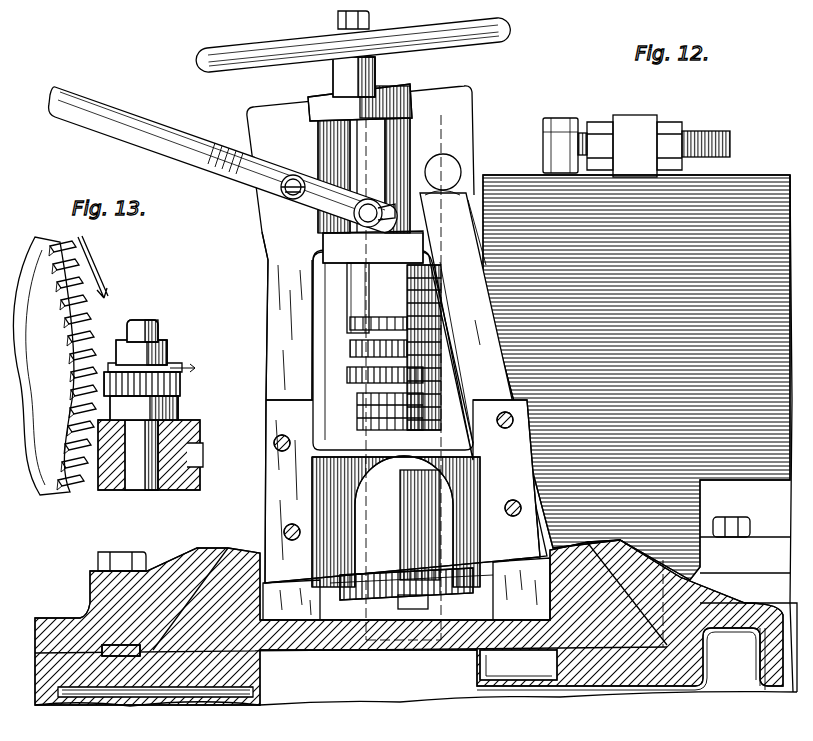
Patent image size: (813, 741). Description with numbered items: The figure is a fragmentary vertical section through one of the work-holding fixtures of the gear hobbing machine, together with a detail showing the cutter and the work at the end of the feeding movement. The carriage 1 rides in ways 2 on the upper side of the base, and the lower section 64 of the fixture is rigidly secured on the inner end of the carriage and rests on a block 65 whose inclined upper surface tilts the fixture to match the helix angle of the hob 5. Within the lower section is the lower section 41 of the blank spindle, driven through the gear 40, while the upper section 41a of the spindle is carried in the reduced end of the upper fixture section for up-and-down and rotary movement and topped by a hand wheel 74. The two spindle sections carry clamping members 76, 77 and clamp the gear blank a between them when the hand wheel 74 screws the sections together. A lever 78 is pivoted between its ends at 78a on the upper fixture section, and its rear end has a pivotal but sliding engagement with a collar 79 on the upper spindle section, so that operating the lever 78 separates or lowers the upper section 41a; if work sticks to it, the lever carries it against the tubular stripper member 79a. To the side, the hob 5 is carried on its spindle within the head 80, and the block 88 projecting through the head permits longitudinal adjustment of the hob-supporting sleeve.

In FIG. 12, the carriage 1 is at (592, 638).
In FIG. 12, the ways 2 is at (610, 596).
In FIG. 12, the hob 5 is at (442, 306).
In FIG. 13, the hob 5 is at (100, 315).
In FIG. 12, the gear 40 is at (383, 574).
In FIG. 13, the lower section of the spindle 41 is at (131, 475).
In FIG. 13, the upper section of the spindle 41a is at (150, 322).
In FIG. 12, the lower section of the fixture 64 is at (280, 483).
In FIG. 12, the block 65 is at (297, 600).
In FIG. 12, the hand wheel 74 is at (399, 27).
In FIG. 12, the clamping member 76 is at (385, 345).
In FIG. 12, the clamping member 77 is at (358, 408).
In FIG. 12, the lever 78 is at (168, 133).
In FIG. 12, the pivot 78a is at (293, 175).
In FIG. 12, the collar 79 is at (397, 187).
In FIG. 12, the tubular stripper member 79a is at (347, 293).
In FIG. 12, the head 80 is at (680, 338).
In FIG. 12, the block 88 is at (654, 146).
In FIG. 12, the gear blank a is at (347, 377).
In FIG. 13, the gear blank a is at (182, 385).